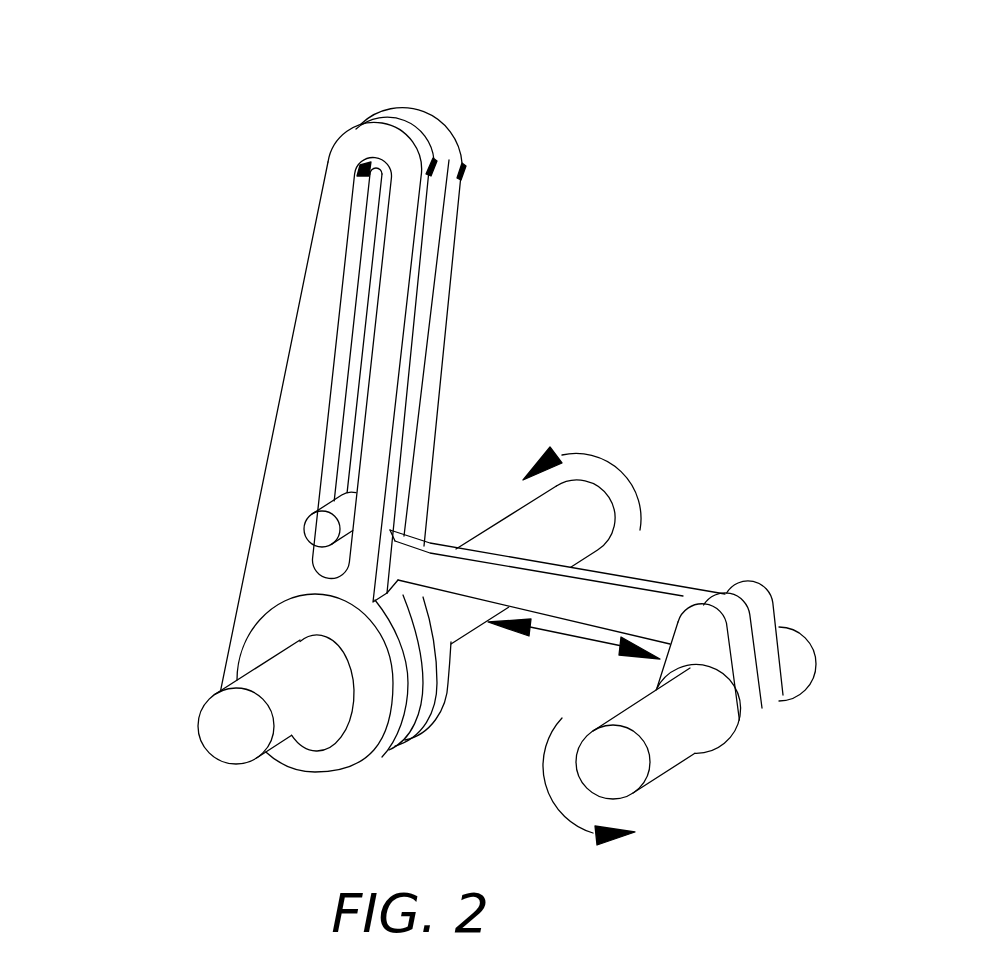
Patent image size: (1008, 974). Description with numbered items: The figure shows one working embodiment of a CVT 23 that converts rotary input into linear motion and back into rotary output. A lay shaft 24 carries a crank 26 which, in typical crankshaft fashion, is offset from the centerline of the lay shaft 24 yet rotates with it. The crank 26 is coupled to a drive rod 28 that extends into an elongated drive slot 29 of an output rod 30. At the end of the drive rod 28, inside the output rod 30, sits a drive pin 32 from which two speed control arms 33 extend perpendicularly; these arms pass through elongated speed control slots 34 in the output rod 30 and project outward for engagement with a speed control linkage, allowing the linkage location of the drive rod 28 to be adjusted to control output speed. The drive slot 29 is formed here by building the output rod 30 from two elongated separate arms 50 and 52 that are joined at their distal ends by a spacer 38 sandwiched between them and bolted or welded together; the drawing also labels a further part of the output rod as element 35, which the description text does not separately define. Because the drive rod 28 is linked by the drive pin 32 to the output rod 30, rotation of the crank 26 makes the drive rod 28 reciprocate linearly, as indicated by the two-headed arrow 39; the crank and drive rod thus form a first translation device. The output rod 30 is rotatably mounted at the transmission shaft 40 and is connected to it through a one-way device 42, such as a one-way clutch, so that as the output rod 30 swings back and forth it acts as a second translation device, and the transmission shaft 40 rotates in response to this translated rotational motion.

The CVT 23 is at (740, 222).
The lay shaft 24 is at (620, 772).
The crank 26 is at (760, 597).
The drive rod 28 is at (625, 575).
The drive slot 29 is at (427, 302).
The output rod 30 is at (322, 110).
The drive pin 32 is at (278, 537).
The speed control arms 33 is at (340, 505).
The speed control slots 34 is at (383, 260).
The front plate 35 is at (338, 192).
The spacer 38 is at (428, 133).
The two-headed arrow 39 is at (570, 640).
The transmission shaft 40 is at (228, 729).
The one-way device 42 is at (343, 720).
The arm 50 is at (260, 482).
The arm 52 is at (437, 412).